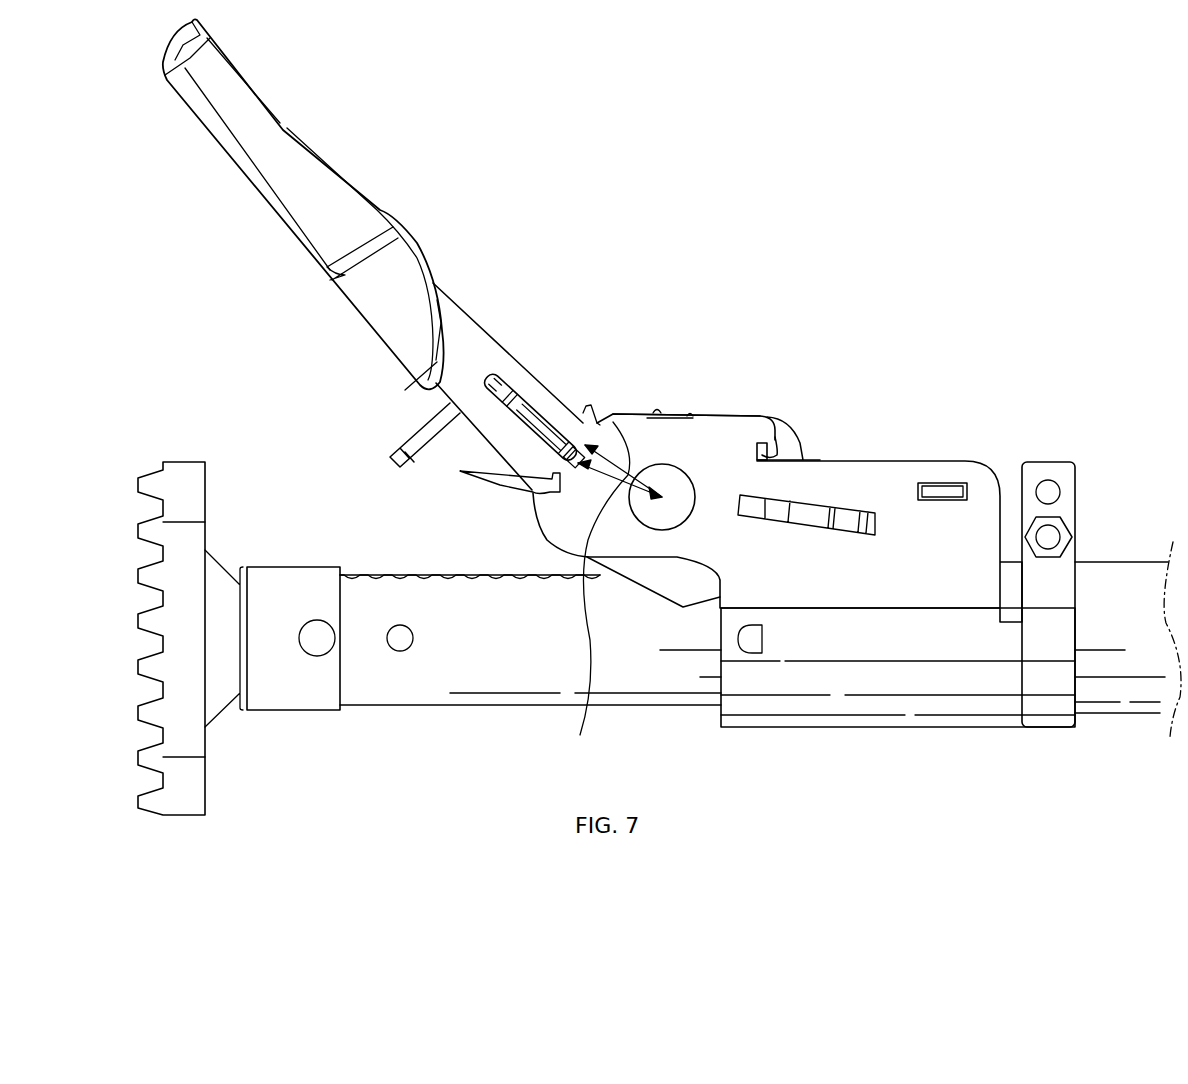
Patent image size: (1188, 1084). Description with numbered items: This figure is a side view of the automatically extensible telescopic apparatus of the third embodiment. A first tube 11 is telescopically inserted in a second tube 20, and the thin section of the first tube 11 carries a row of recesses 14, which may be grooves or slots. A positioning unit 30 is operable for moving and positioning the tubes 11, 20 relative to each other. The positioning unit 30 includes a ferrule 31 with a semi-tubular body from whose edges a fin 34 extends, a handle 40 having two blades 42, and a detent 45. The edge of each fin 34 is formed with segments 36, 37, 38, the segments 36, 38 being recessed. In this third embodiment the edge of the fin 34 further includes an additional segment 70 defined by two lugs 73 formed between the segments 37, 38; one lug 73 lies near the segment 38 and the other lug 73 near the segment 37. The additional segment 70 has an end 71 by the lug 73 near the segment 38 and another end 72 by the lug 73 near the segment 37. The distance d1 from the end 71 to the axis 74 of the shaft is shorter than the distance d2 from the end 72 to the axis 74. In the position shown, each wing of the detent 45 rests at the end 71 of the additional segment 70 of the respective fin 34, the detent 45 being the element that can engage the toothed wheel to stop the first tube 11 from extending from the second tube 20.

The first tube 11 is at (428, 682).
The recesses 14 is at (390, 573).
The second tube 20 is at (1117, 690).
The positioning unit 30 is at (1017, 418).
The ferrule 31 is at (940, 682).
The fin 34 is at (942, 473).
The segment 36 is at (790, 445).
The segment 37 is at (716, 415).
The segment 38 is at (513, 479).
The handle 40 is at (375, 285).
The blade 42 is at (472, 343).
The detent 45 is at (418, 440).
The additional segment 70 is at (602, 297).
The end 71 is at (520, 397).
The end 72 is at (560, 427).
The lug 73 is at (589, 412).
The axis 74 is at (676, 490).
The distance d1 is at (599, 593).
The distance d2 is at (628, 462).